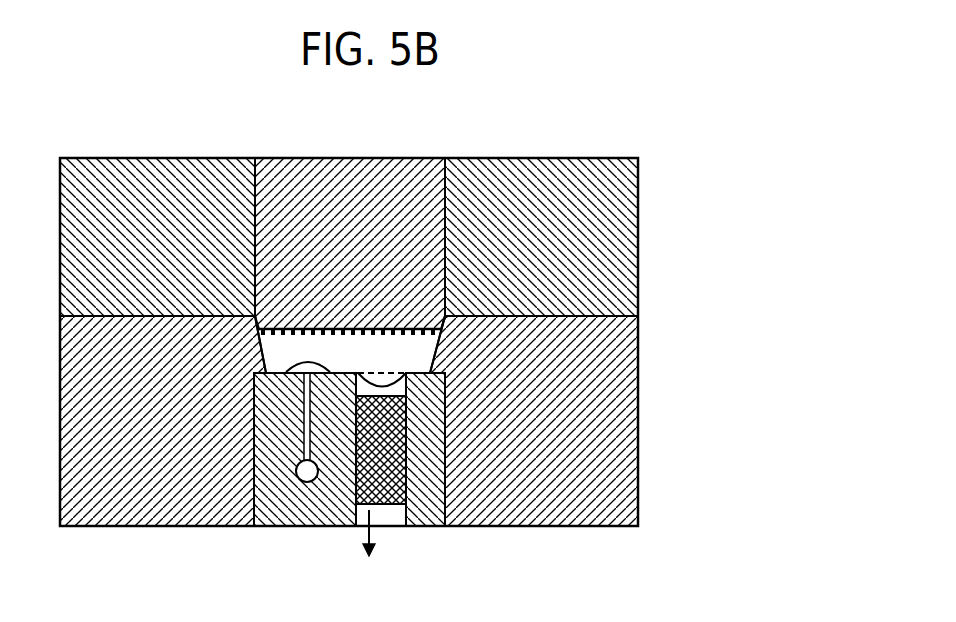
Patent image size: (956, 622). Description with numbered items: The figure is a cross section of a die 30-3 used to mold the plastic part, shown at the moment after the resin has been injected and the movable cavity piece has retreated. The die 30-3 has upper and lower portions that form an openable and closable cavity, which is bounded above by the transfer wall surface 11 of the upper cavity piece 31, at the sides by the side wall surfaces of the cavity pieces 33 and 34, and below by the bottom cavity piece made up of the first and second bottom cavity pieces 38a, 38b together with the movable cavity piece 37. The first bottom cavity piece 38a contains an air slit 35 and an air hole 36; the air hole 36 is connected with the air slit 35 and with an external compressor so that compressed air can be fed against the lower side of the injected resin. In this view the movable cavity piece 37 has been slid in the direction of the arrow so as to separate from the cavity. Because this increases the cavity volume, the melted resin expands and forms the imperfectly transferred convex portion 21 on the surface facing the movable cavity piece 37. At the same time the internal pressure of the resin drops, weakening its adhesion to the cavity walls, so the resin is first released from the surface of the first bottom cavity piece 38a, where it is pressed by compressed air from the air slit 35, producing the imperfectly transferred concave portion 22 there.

The die 30-3 is at (602, 112).
The upper cavity piece 31 is at (383, 161).
The fine uneven pattern 11 is at (295, 320).
The cavity piece 33 is at (146, 518).
The cavity piece 34 is at (530, 512).
The first bottom cavity piece 38a is at (317, 512).
The second bottom cavity piece 38b is at (418, 512).
The air slit 35 is at (296, 420).
The air hole 36 is at (289, 471).
The movable cavity piece 37 is at (383, 498).
The imperfectly transferred convex portion 21 is at (373, 381).
The imperfectly transferred concave portion 22 is at (305, 357).